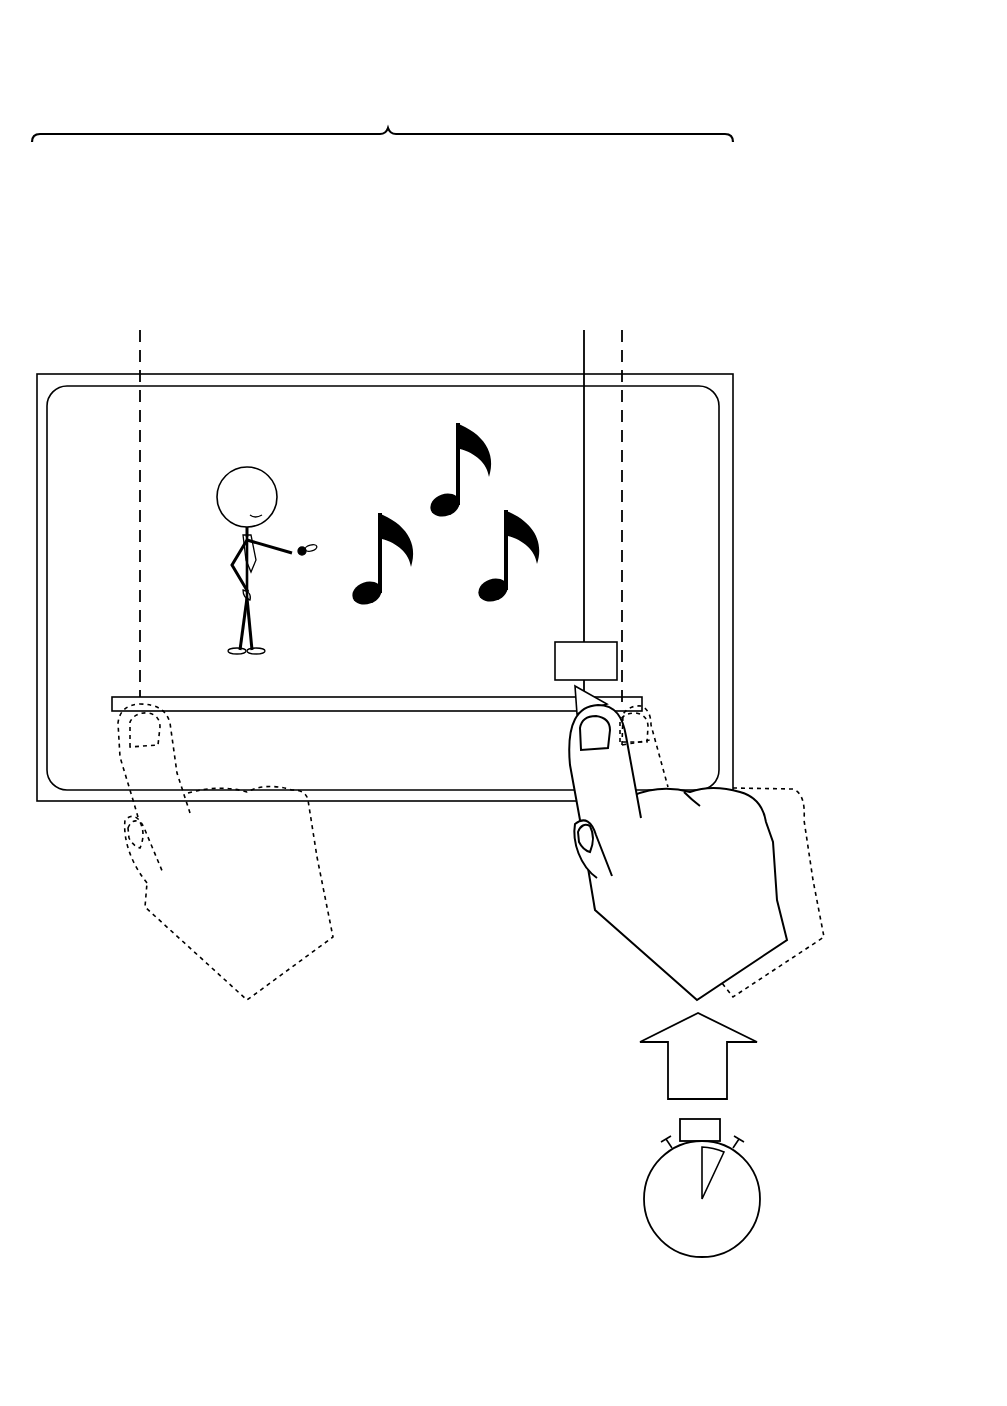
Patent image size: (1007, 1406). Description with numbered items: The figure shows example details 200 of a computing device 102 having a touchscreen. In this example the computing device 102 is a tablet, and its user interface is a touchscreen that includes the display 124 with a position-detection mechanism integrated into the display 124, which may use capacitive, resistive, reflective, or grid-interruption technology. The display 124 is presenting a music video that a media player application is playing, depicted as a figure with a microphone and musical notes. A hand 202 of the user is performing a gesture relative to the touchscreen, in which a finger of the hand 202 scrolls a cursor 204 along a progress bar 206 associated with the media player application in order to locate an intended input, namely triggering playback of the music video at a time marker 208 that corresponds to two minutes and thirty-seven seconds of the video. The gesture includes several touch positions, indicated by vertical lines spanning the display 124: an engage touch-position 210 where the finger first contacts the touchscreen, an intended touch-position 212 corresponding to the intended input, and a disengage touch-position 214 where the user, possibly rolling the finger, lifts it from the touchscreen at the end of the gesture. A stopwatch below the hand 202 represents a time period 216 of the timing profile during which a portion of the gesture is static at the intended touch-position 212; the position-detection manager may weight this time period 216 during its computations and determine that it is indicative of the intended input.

The example details 200 is at (126, 47).
The computing device 102 is at (407, 112).
The display 124 is at (386, 374).
The hand 202 is at (640, 950).
The cursor 204 is at (574, 691).
The progress bar 206 is at (530, 716).
The time marker 208 is at (555, 657).
The engage touch-position 210 is at (142, 326).
The intended touch-position 212 is at (582, 326).
The disengage touch-position 214 is at (624, 326).
The time period 216 is at (642, 1200).